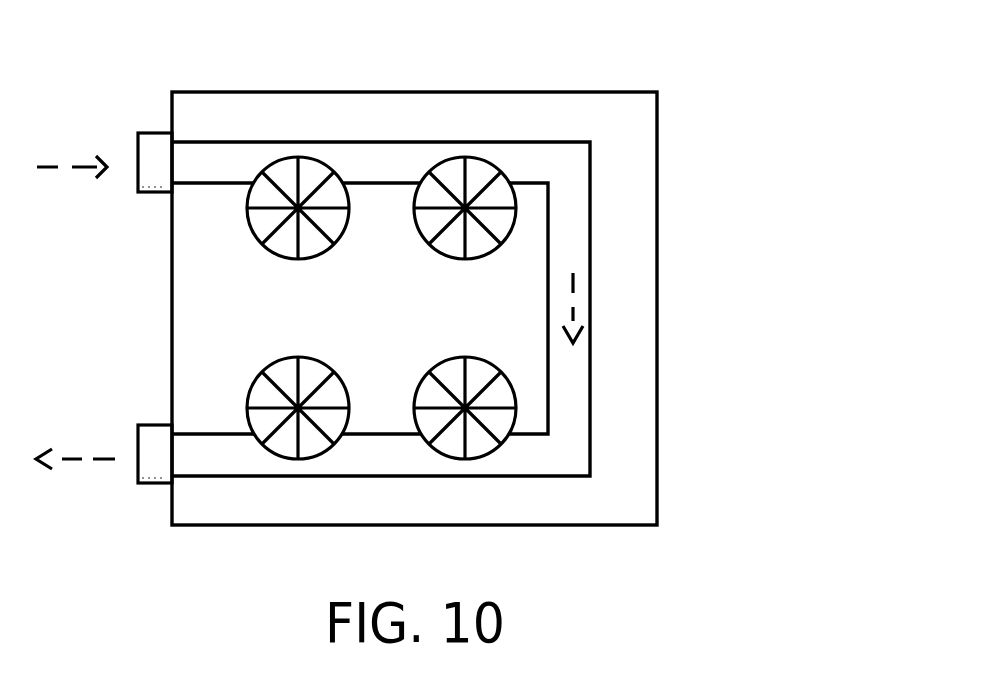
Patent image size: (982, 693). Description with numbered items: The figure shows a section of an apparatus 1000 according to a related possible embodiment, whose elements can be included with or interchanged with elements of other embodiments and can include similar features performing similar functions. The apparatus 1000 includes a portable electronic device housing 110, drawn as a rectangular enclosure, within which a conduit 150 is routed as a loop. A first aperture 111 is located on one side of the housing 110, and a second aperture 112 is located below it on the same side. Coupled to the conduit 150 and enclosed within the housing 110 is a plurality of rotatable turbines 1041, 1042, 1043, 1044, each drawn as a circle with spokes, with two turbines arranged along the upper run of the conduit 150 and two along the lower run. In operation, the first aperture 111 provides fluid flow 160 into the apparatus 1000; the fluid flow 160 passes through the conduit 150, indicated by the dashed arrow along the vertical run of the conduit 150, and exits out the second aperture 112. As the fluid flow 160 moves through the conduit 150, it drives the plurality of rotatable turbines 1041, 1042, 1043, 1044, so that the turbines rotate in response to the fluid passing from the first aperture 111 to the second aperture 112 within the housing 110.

The apparatus 1000 is at (784, 162).
The portable electronic device housing 110 is at (542, 92).
The first aperture 111 is at (121, 145).
The second aperture 112 is at (121, 443).
The conduit 150 is at (614, 192).
The fluid flow 160 is at (575, 285).
The rotatable turbine 1041 is at (248, 231).
The rotatable turbine 1042 is at (423, 239).
The rotatable turbine 1043 is at (258, 378).
The rotatable turbine 1044 is at (423, 379).